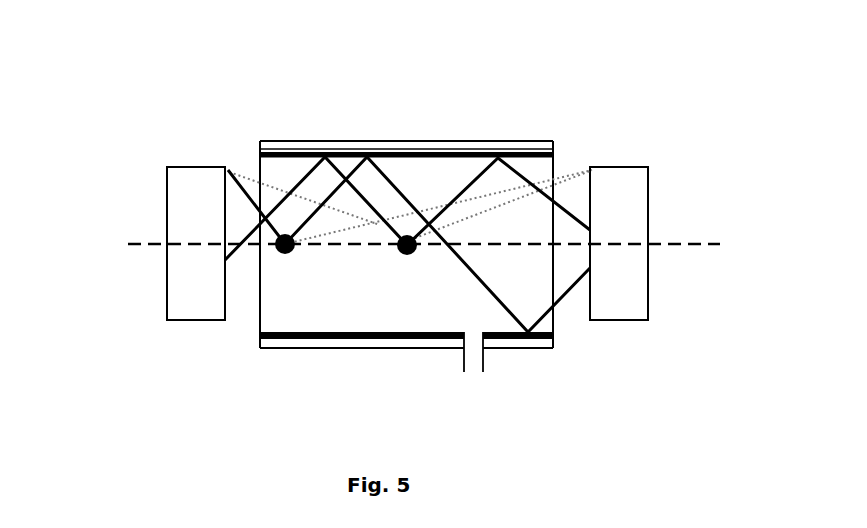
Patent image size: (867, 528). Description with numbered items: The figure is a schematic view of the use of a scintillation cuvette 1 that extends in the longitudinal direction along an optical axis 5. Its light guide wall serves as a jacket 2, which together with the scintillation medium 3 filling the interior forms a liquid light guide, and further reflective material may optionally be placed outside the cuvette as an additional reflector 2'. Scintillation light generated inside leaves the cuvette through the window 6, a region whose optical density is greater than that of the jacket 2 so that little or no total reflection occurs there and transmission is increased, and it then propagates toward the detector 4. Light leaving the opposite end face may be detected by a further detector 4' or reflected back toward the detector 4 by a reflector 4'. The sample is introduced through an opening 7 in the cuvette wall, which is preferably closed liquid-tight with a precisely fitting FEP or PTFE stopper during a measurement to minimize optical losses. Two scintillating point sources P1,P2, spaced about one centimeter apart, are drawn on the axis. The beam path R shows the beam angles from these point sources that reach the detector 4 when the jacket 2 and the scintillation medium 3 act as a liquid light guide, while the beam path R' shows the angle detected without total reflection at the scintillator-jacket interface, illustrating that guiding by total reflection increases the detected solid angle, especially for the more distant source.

The scintillation cuvette 1 is at (527, 103).
The jacket 2 is at (406, 195).
The additional reflector 2' is at (406, 191).
The scintillation medium 3 is at (426, 178).
The detector 4 is at (165, 210).
The further detector or reflector 4' is at (648, 204).
The optical axis 5 is at (142, 249).
The window 6 is at (262, 300).
The opening 7 is at (484, 363).
The beam path R is at (407, 157).
The beam path without total reflection R' is at (394, 195).
The scintillating point sources P1,P2 is at (407, 255).